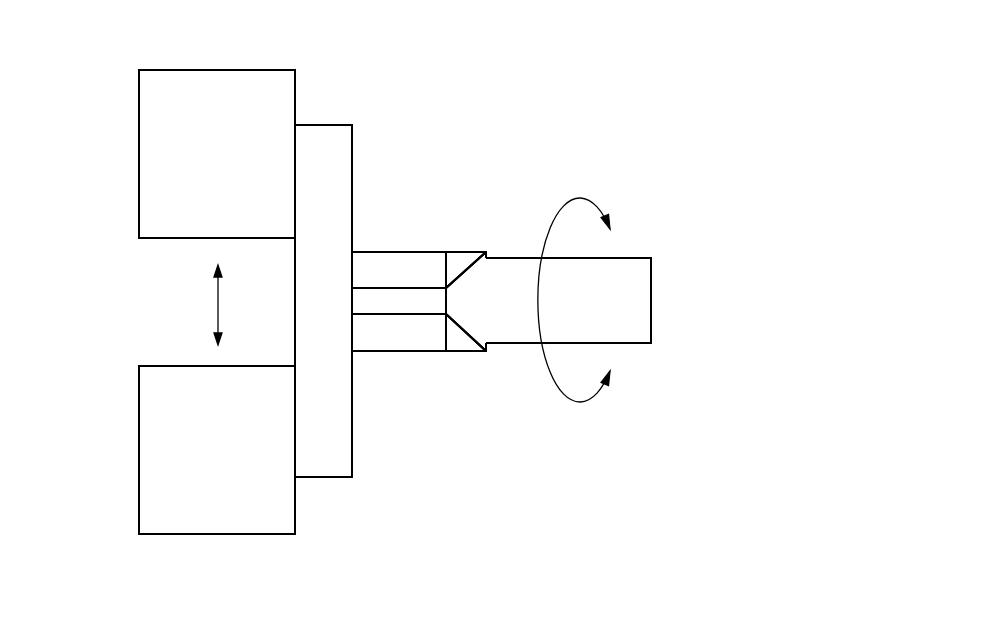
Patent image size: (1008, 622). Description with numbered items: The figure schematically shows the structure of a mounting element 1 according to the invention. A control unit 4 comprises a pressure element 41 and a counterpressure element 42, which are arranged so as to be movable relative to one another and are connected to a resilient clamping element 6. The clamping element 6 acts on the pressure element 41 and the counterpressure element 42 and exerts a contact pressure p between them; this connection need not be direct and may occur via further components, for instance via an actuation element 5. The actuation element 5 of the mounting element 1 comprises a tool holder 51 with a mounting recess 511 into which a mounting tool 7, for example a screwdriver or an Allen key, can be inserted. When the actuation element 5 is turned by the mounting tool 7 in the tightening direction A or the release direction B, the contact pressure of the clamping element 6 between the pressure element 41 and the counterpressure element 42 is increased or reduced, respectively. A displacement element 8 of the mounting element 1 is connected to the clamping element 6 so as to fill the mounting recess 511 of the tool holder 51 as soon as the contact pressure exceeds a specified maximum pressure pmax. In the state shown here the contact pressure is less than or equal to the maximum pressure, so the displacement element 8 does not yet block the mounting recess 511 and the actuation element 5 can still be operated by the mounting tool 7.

The mounting element 1 is at (502, 87).
The control unit 4 is at (65, 70).
The pressure element 41 is at (214, 162).
The counterpressure element 42 is at (214, 456).
The actuation element 5 is at (447, 297).
The tool holder 51 is at (487, 351).
The mounting recess 511 is at (462, 267).
The clamping element 6 is at (333, 312).
The mounting tool 7 is at (613, 303).
The displacement element 8 is at (387, 303).